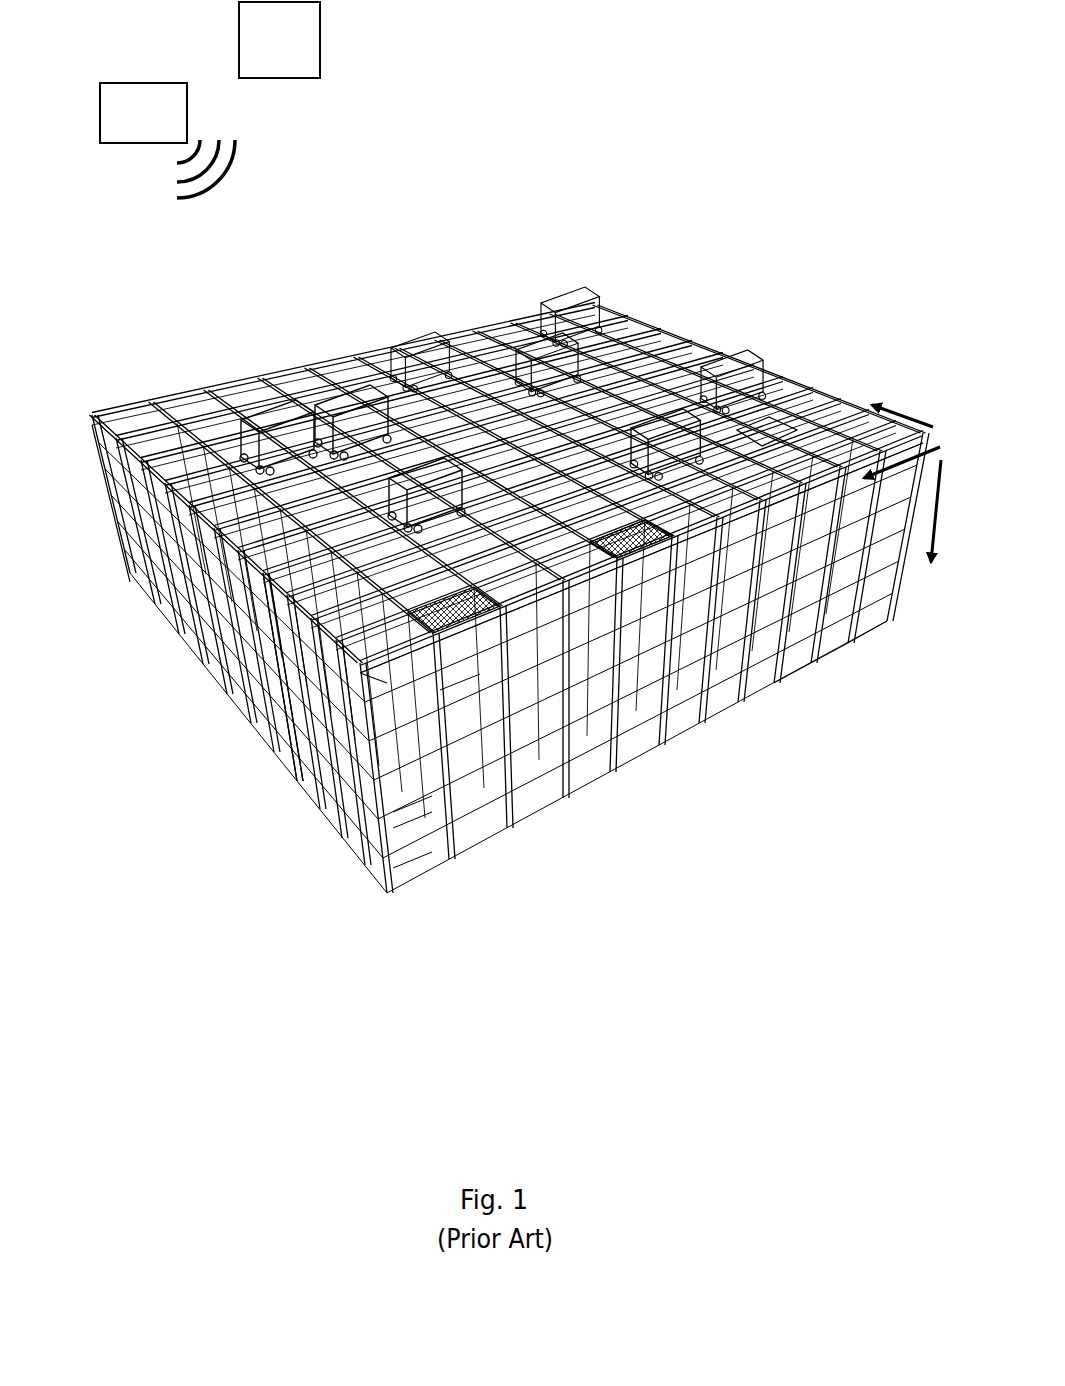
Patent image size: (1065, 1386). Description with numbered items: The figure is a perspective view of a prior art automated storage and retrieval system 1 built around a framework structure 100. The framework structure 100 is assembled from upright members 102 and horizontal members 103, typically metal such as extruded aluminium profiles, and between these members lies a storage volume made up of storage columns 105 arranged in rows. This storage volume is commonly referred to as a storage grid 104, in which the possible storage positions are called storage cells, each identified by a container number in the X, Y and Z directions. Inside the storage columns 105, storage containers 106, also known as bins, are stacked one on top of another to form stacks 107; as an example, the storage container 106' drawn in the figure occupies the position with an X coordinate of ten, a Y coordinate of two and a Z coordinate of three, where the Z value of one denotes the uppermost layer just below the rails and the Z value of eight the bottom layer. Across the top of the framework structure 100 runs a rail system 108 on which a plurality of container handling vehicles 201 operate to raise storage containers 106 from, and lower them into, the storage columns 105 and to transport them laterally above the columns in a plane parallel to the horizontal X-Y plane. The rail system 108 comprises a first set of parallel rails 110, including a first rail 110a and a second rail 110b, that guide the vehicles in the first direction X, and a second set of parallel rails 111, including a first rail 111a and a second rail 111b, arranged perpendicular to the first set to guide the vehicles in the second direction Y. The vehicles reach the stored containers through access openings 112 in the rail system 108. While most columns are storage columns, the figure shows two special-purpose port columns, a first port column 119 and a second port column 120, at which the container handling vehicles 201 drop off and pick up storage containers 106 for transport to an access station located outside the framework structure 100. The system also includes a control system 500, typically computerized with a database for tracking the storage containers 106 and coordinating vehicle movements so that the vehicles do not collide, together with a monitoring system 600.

The automated storage and retrieval system 1 is at (457, 207).
The framework structure 100 is at (120, 573).
The upright members 102 is at (370, 767).
The horizontal members 103 is at (722, 623).
The storage grid 104 is at (110, 441).
The storage column 105 is at (282, 678).
The storage container 106 is at (514, 891).
The particular position of storage container 106' is at (522, 784).
The stack 107 is at (803, 660).
The rail system 108 is at (853, 407).
The first set of parallel rails 110 is at (802, 433).
The first rail in first direction 110a is at (250, 398).
The second rail in first direction 110b is at (260, 393).
The second set of parallel rails 111 is at (360, 357).
The first rail of second direction 111a is at (210, 392).
The second rail of second direction 111b is at (275, 383).
The access opening 112 is at (633, 362).
The first port column 119 is at (463, 623).
The second port column 120 is at (630, 548).
The container handling vehicle 201 is at (583, 295).
The control system 500 is at (167, 140).
The monitoring system 600 is at (279, 40).